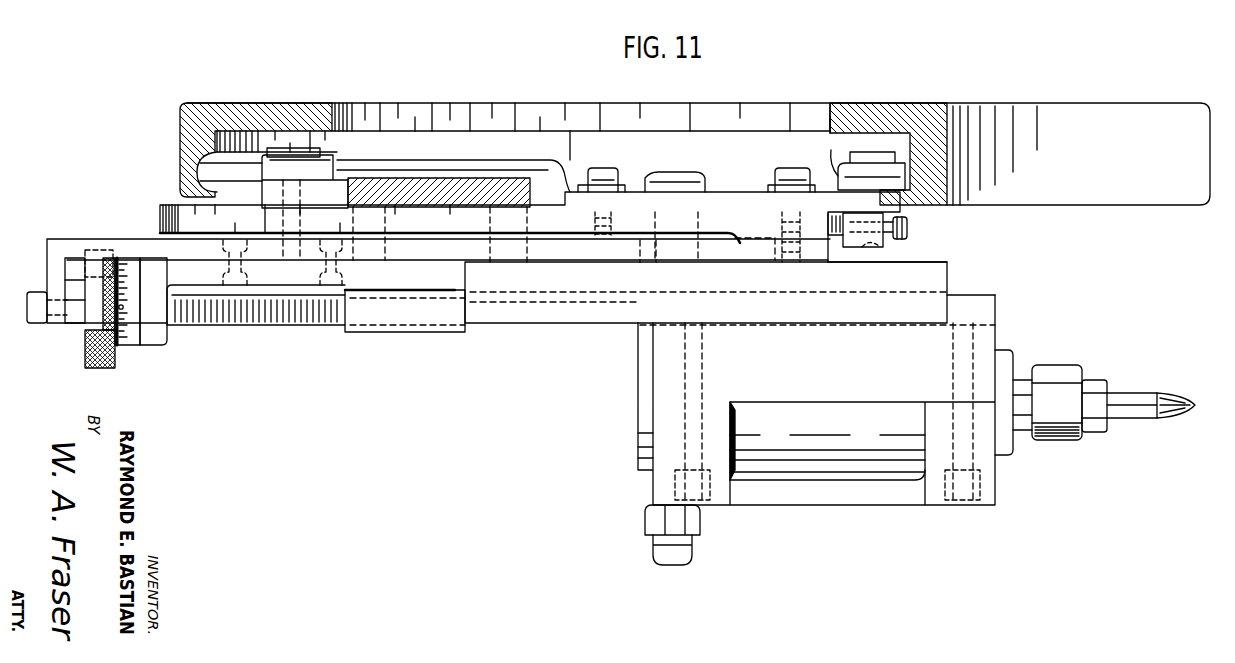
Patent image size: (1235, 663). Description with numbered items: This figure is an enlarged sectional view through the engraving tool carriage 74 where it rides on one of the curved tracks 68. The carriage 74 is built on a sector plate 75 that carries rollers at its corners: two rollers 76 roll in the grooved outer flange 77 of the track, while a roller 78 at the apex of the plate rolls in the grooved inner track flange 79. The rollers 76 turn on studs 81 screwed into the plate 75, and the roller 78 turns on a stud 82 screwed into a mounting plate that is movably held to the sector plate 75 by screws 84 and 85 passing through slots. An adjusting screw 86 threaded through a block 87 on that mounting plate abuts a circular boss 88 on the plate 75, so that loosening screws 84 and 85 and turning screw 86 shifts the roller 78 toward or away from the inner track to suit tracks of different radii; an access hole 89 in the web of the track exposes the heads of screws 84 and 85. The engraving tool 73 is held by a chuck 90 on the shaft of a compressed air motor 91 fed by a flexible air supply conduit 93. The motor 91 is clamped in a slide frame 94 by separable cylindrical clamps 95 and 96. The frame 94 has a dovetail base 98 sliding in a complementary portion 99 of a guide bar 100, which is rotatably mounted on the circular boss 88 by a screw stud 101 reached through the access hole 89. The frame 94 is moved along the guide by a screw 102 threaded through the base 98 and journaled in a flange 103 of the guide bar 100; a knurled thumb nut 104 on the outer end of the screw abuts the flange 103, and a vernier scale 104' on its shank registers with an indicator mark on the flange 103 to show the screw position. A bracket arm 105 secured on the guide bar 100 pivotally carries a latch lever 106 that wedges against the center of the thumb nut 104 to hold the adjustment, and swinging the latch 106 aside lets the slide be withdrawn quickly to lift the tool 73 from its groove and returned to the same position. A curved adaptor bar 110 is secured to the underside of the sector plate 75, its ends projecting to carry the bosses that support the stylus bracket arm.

The curved track 68 is at (681, 138).
The engraving tool 73 is at (1151, 425).
The carriage 74 is at (530, 229).
The sector plate 75 is at (278, 215).
The rollers 76 is at (293, 140).
The outer flange 77 is at (194, 172).
The roller 78 is at (881, 141).
The inner track flange 79 is at (995, 172).
The studs 81 is at (293, 114).
The stud 82 is at (871, 130).
The screw 84 is at (601, 186).
The screw 85 is at (791, 199).
The adjusting screw 86 is at (914, 224).
The block 87 is at (873, 238).
The circular boss 88 is at (880, 271).
The access hole 89 is at (582, 101).
The chuck 90 is at (1051, 414).
The compressed air motor 91 is at (827, 460).
The flexible air supply conduit 93 is at (672, 555).
The slide frame 94 is at (816, 400).
The cylindrical clamp 95 is at (717, 503).
The cylindrical clamp 96 is at (979, 506).
The dovetail base 98 is at (405, 324).
The complementary portion 99 is at (730, 317).
The guide bar 100 is at (282, 297).
The screw stud 101 is at (677, 199).
The screw 102 is at (256, 319).
The flange 103 is at (178, 306).
The knurled thumb nut 104 is at (108, 330).
The vernier scale 104' is at (150, 322).
The bracket arm 105 is at (430, 261).
The latch lever 106 is at (56, 312).
The curved adaptor bar 110 is at (439, 168).